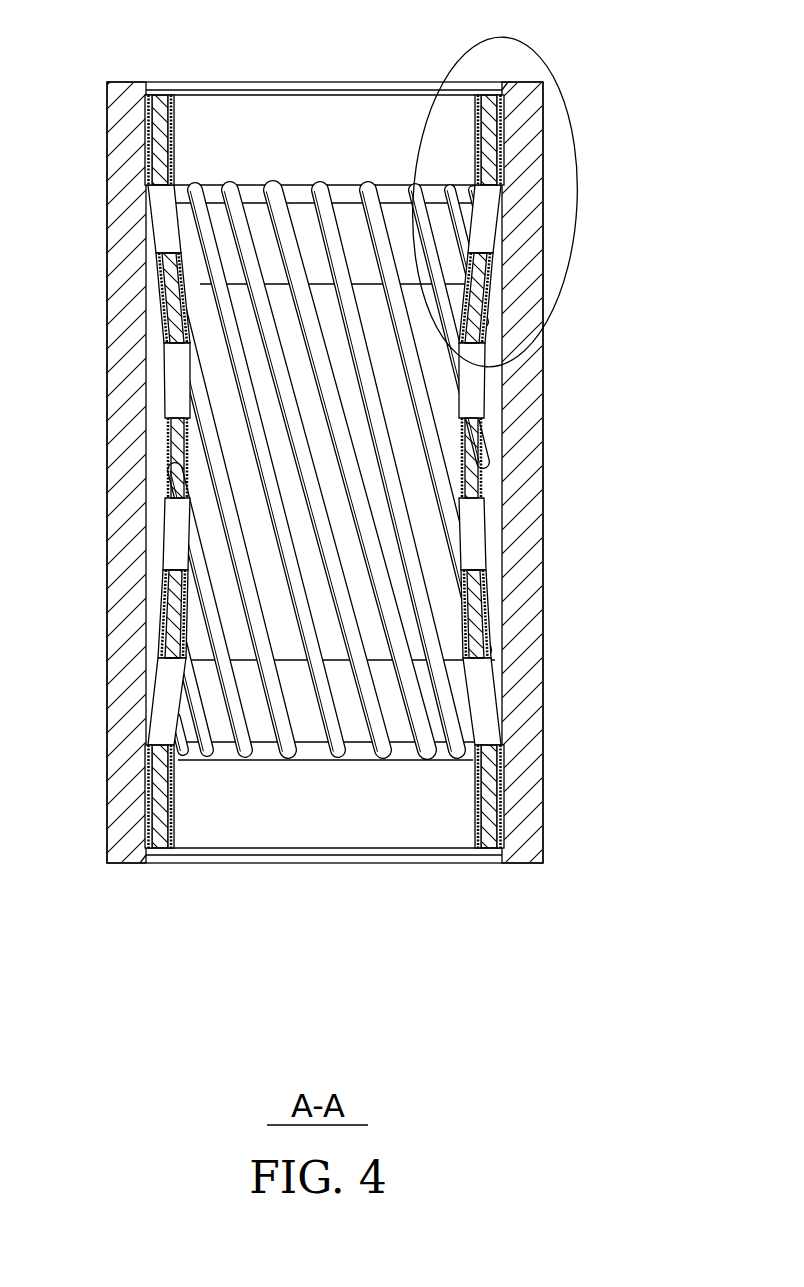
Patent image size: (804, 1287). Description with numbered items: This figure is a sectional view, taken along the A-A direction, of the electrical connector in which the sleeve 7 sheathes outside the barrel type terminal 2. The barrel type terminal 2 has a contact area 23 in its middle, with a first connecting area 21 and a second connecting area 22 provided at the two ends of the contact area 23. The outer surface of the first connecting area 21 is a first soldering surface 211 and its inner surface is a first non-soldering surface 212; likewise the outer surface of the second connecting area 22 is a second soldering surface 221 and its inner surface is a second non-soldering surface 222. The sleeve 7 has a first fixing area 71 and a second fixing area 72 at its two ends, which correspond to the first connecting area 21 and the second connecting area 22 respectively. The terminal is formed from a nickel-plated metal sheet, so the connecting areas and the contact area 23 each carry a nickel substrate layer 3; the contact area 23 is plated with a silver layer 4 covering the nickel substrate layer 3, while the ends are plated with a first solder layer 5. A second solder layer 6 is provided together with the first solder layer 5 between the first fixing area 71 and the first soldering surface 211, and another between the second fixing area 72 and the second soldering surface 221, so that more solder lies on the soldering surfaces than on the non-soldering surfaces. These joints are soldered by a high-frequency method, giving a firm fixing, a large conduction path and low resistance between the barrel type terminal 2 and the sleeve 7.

The barrel type terminal 2 is at (210, 117).
The first connecting area 21 is at (377, 112).
The first soldering surface 211 is at (146, 118).
The first non-soldering surface 212 is at (288, 105).
The second connecting area 22 is at (402, 825).
The second soldering surface 221 is at (160, 816).
The second non-soldering surface 222 is at (268, 825).
The contact area 23 is at (185, 485).
The nickel substrate layer 3 is at (155, 130).
The silver layer 4 is at (178, 465).
The first solder layer 5 is at (168, 118).
The second solder layer 6 is at (147, 103).
The sleeve 7 is at (100, 338).
The first fixing area 71 is at (112, 110).
The second fixing area 72 is at (125, 848).